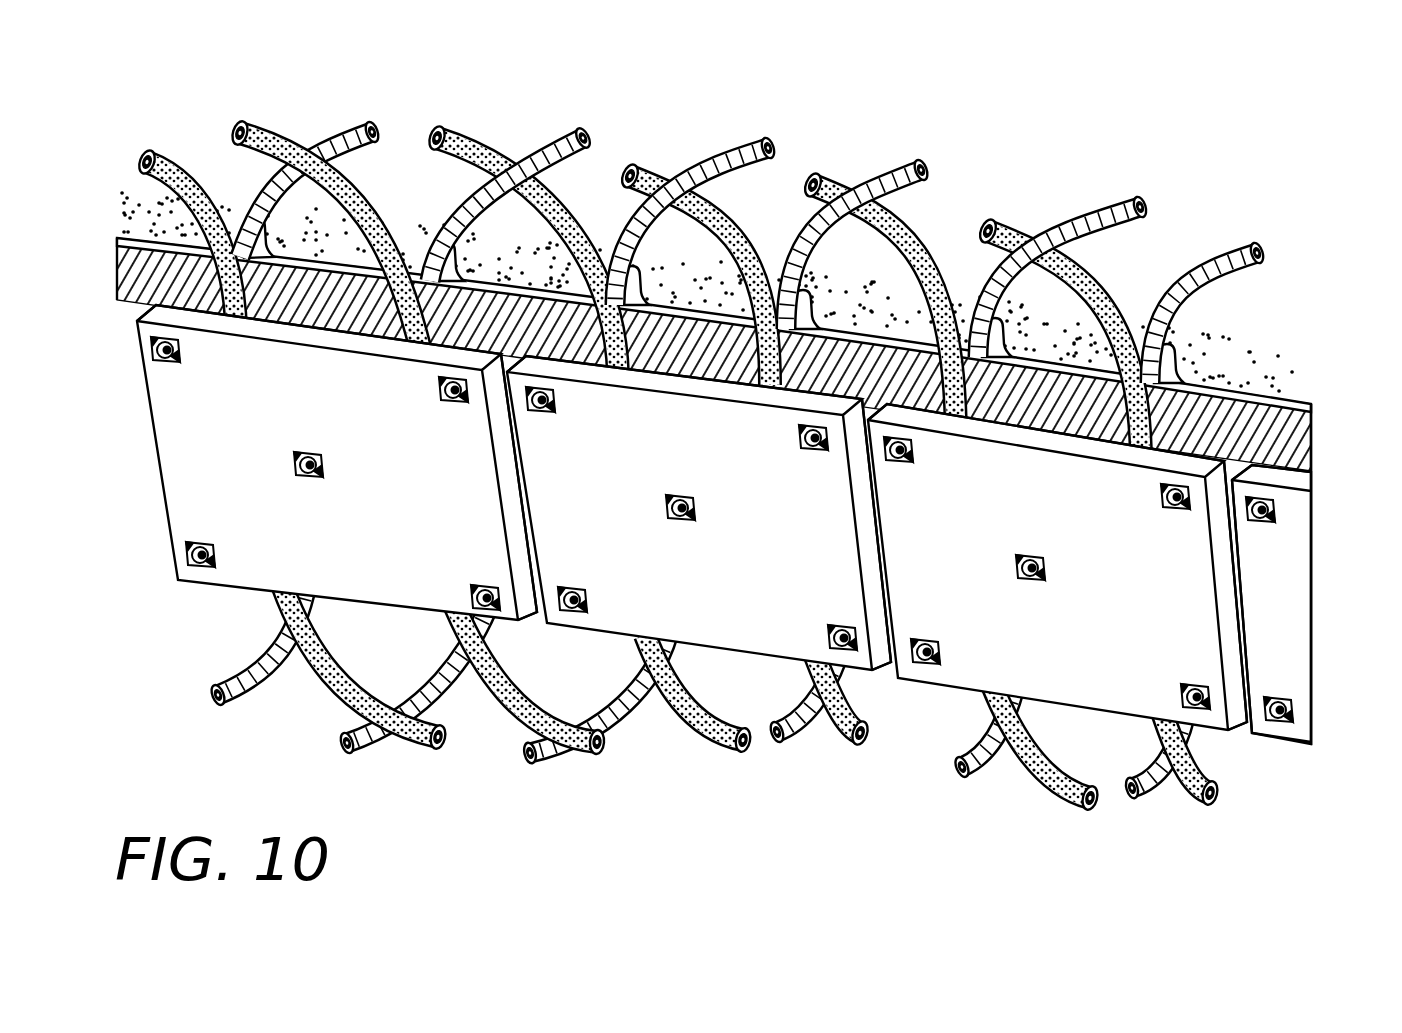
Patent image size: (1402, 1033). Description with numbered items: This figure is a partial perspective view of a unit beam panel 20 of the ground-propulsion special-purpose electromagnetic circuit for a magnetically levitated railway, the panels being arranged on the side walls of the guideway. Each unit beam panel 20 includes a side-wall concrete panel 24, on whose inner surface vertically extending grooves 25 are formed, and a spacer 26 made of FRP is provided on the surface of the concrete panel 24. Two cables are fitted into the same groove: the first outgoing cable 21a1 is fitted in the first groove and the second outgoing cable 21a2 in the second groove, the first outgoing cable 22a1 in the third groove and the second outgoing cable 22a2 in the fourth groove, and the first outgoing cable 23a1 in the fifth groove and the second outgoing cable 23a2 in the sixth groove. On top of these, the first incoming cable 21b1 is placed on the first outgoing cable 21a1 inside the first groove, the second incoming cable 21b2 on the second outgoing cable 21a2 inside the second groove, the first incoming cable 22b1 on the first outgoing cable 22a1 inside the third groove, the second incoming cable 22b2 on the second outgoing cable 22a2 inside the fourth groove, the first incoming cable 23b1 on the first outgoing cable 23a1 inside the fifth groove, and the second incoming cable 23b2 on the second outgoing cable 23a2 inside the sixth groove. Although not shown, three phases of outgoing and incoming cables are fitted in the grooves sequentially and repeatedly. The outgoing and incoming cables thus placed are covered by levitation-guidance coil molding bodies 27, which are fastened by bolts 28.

The unit beam panel 20 is at (759, 469).
The first outgoing cable 21a1 is at (347, 120).
The second outgoing cable 21a2 is at (543, 140).
The first incoming cable 21b1 is at (162, 153).
The second incoming cable 21b2 is at (270, 120).
The first outgoing cable 22a1 is at (730, 145).
The second outgoing cable 22a2 is at (890, 167).
The first incoming cable 22b1 is at (603, 156).
The second incoming cable 22b2 is at (728, 212).
The first outgoing cable 23a1 is at (1097, 207).
The second outgoing cable 23a2 is at (1223, 253).
The first incoming cable 23b1 is at (907, 237).
The second incoming cable 23b2 is at (1097, 280).
The side-wall concrete panel 24 is at (1258, 384).
The groove 25 is at (1182, 362).
The spacer 26 is at (1253, 433).
The levitation-guidance coil molding body 27 is at (684, 525).
The bolt 28 is at (153, 346).